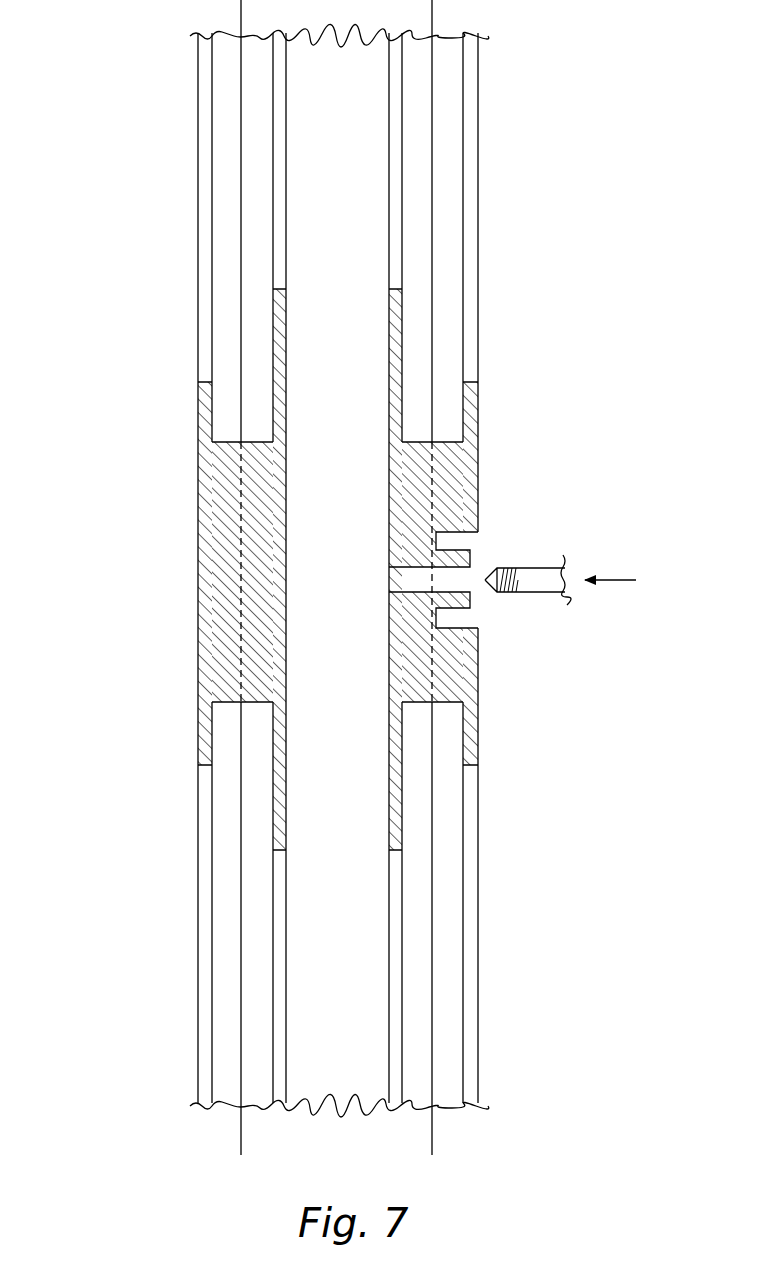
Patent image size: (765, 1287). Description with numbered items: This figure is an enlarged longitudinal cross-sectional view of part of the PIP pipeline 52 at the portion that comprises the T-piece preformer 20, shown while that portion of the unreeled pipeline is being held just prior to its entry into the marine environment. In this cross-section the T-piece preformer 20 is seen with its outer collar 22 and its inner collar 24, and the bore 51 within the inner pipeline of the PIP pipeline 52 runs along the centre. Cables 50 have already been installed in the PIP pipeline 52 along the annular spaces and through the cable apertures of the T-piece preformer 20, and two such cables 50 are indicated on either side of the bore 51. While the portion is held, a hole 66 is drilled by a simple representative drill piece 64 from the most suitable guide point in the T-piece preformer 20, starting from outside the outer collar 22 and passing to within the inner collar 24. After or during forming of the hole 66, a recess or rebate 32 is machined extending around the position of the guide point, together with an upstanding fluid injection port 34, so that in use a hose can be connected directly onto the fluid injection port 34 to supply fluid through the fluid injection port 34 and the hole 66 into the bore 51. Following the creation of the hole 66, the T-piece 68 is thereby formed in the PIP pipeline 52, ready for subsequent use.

The T-piece preformer 20 is at (158, 664).
The outer collar 22 is at (480, 458).
The inner collar 24 is at (388, 488).
The recess 32 is at (497, 527).
The fluid injection port 34 is at (450, 603).
The cable 50 is at (242, 979).
The bore 51 is at (360, 222).
The PIP pipeline 52 is at (142, 202).
The drill piece 64 is at (517, 568).
The hole 66 is at (382, 585).
The T-piece 68 is at (186, 518).